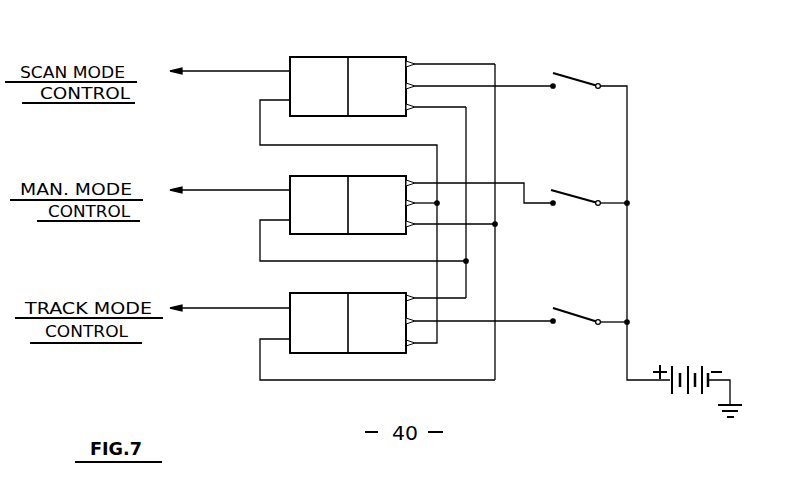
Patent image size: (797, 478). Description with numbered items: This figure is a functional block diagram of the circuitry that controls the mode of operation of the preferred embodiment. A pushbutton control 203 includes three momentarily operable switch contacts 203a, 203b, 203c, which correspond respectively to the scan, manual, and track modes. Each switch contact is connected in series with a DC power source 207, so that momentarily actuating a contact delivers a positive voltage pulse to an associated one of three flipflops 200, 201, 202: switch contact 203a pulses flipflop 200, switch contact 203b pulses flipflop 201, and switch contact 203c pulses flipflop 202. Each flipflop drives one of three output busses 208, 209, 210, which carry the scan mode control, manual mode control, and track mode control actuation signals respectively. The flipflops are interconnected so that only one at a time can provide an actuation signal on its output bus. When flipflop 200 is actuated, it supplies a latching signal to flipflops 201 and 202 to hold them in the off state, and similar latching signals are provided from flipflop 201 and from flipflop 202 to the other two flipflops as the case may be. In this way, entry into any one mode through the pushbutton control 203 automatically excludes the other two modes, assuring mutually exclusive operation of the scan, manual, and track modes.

The flipflop 200 is at (354, 72).
The flipflop 201 is at (312, 186).
The flipflop 202 is at (318, 307).
The pushbutton control 203 is at (638, 89).
The switch contact 203a is at (595, 54).
The switch contact 203b is at (578, 195).
The switch contact 203c is at (573, 310).
The DC power source 207 is at (688, 363).
The output bus 208 is at (212, 71).
The output bus 209 is at (203, 189).
The output bus 210 is at (206, 307).